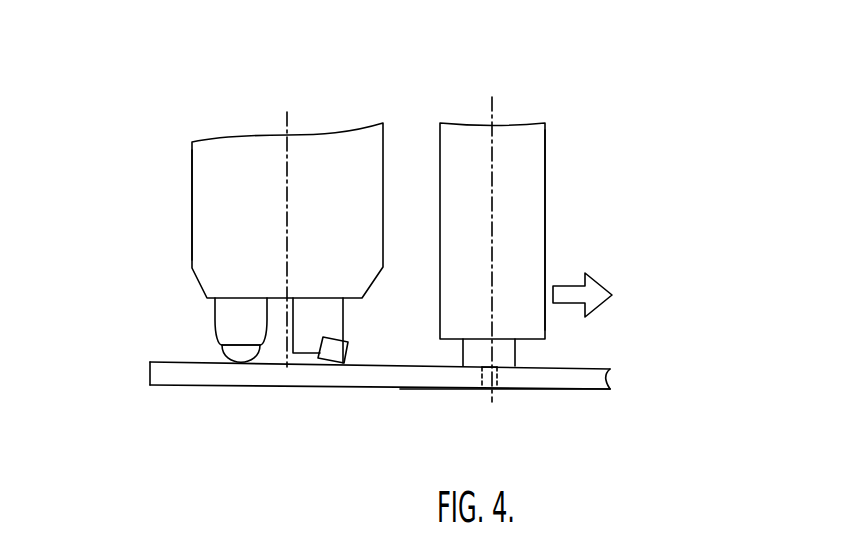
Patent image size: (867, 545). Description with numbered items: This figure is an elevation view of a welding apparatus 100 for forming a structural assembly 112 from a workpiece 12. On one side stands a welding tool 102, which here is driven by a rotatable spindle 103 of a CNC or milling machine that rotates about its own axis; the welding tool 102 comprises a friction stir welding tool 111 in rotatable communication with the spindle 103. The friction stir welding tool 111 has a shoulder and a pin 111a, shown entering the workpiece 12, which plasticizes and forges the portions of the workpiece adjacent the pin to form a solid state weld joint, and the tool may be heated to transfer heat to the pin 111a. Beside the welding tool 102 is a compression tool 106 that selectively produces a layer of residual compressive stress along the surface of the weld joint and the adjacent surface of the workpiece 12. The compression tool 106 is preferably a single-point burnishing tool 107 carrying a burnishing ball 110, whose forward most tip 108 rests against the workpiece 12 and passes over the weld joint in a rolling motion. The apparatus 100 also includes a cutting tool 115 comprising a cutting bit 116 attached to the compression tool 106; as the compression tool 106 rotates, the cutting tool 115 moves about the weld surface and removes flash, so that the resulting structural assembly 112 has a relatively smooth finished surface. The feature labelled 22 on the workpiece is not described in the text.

The welding apparatus 100 is at (195, 86).
The compression tool 106 is at (191, 212).
The burnishing tool 107 is at (208, 238).
The forward most tip 108 is at (245, 362).
The burnishing ball 110 is at (222, 345).
The cutting tool 115 is at (348, 343).
The cutting bit 116 is at (345, 361).
The welding tool 102 is at (550, 261).
The rotatable spindle 103 is at (548, 201).
The friction stir welding tool 111 is at (520, 352).
The pin 111a is at (500, 380).
The workpiece 12 is at (613, 373).
The structural assembly 112 is at (603, 389).
The hole in substrate 22 is at (483, 380).